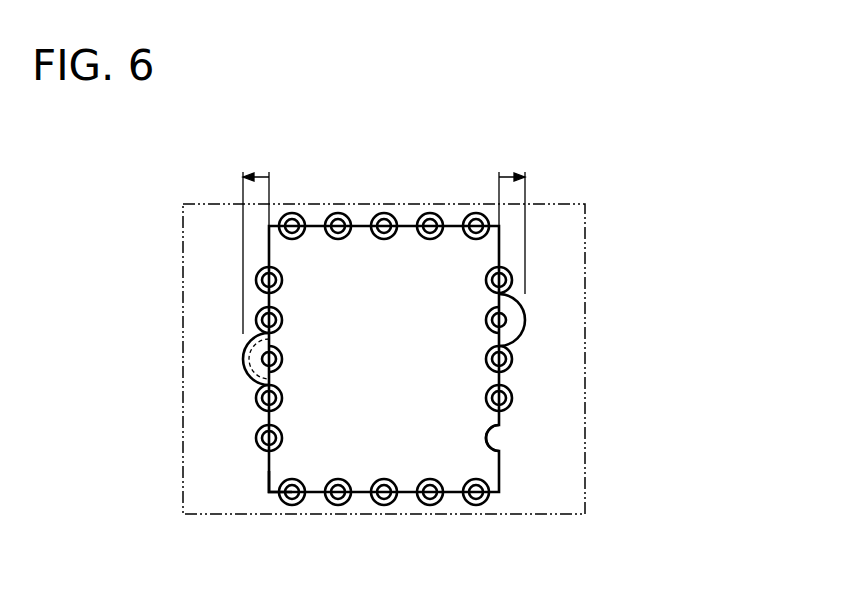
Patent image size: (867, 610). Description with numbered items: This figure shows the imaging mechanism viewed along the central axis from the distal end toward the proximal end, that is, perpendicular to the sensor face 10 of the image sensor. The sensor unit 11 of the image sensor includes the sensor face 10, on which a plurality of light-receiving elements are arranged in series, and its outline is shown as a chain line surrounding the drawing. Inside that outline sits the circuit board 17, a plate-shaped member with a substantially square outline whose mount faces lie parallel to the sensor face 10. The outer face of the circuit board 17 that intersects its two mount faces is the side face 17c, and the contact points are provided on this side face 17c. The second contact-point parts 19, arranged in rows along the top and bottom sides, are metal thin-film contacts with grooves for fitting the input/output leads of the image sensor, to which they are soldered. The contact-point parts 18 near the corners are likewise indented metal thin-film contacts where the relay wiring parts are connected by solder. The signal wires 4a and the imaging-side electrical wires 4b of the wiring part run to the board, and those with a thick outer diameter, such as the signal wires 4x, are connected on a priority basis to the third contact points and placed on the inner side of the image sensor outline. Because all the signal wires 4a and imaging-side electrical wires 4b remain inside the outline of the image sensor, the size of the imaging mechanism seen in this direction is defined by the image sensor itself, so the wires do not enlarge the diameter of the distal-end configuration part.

The second contact-point part 19 is at (291, 226).
The contact-point part 18 is at (269, 281).
The signal wire 4x is at (257, 360).
The signal wire 4a is at (376, 215).
The imaging-side electrical wire 4b is at (512, 398).
The sensor unit 11 is at (587, 331).
The sensor face 10 is at (548, 359).
The circuit board 17 is at (490, 472).
The side face 17c is at (268, 472).